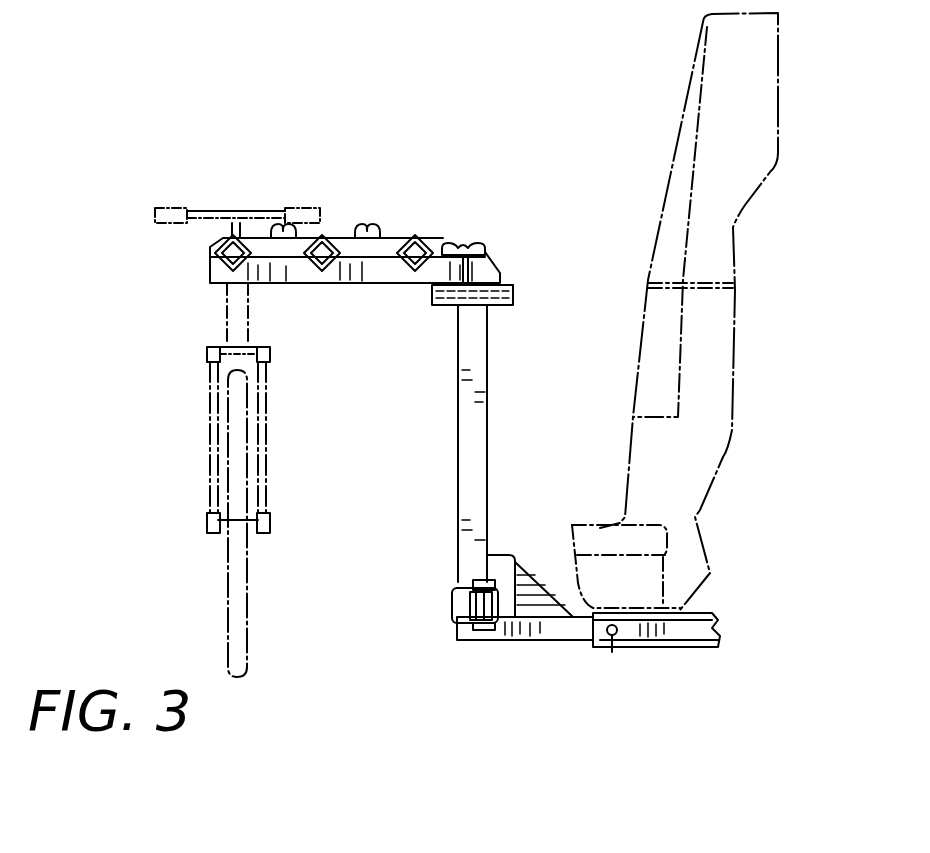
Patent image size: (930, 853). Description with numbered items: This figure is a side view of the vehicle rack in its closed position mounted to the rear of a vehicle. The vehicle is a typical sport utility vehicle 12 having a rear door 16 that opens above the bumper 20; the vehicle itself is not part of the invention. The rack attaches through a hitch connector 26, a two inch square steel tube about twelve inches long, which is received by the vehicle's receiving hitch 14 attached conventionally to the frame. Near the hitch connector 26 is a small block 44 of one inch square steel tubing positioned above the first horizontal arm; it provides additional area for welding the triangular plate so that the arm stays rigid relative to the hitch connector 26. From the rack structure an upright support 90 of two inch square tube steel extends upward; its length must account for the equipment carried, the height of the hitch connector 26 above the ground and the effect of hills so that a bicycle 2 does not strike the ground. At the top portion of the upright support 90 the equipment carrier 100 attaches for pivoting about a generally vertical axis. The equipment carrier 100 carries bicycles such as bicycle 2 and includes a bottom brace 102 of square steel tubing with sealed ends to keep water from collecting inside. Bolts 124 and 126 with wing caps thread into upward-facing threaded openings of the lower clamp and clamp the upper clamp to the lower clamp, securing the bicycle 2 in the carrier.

The equipment carrier 100 is at (176, 279).
The bottom brace 102 is at (363, 268).
The bolt with wing cap 126 is at (281, 226).
The bolt with wing cap 124 is at (380, 226).
The bicycle 2 is at (207, 356).
The upright support 90 is at (467, 436).
The small block 44 is at (502, 578).
The hitch connector 26 is at (577, 627).
The receiving hitch 14 is at (723, 637).
The sport utility vehicle 12 is at (768, 226).
The rear door 16 is at (652, 472).
The bumper 20 is at (650, 570).